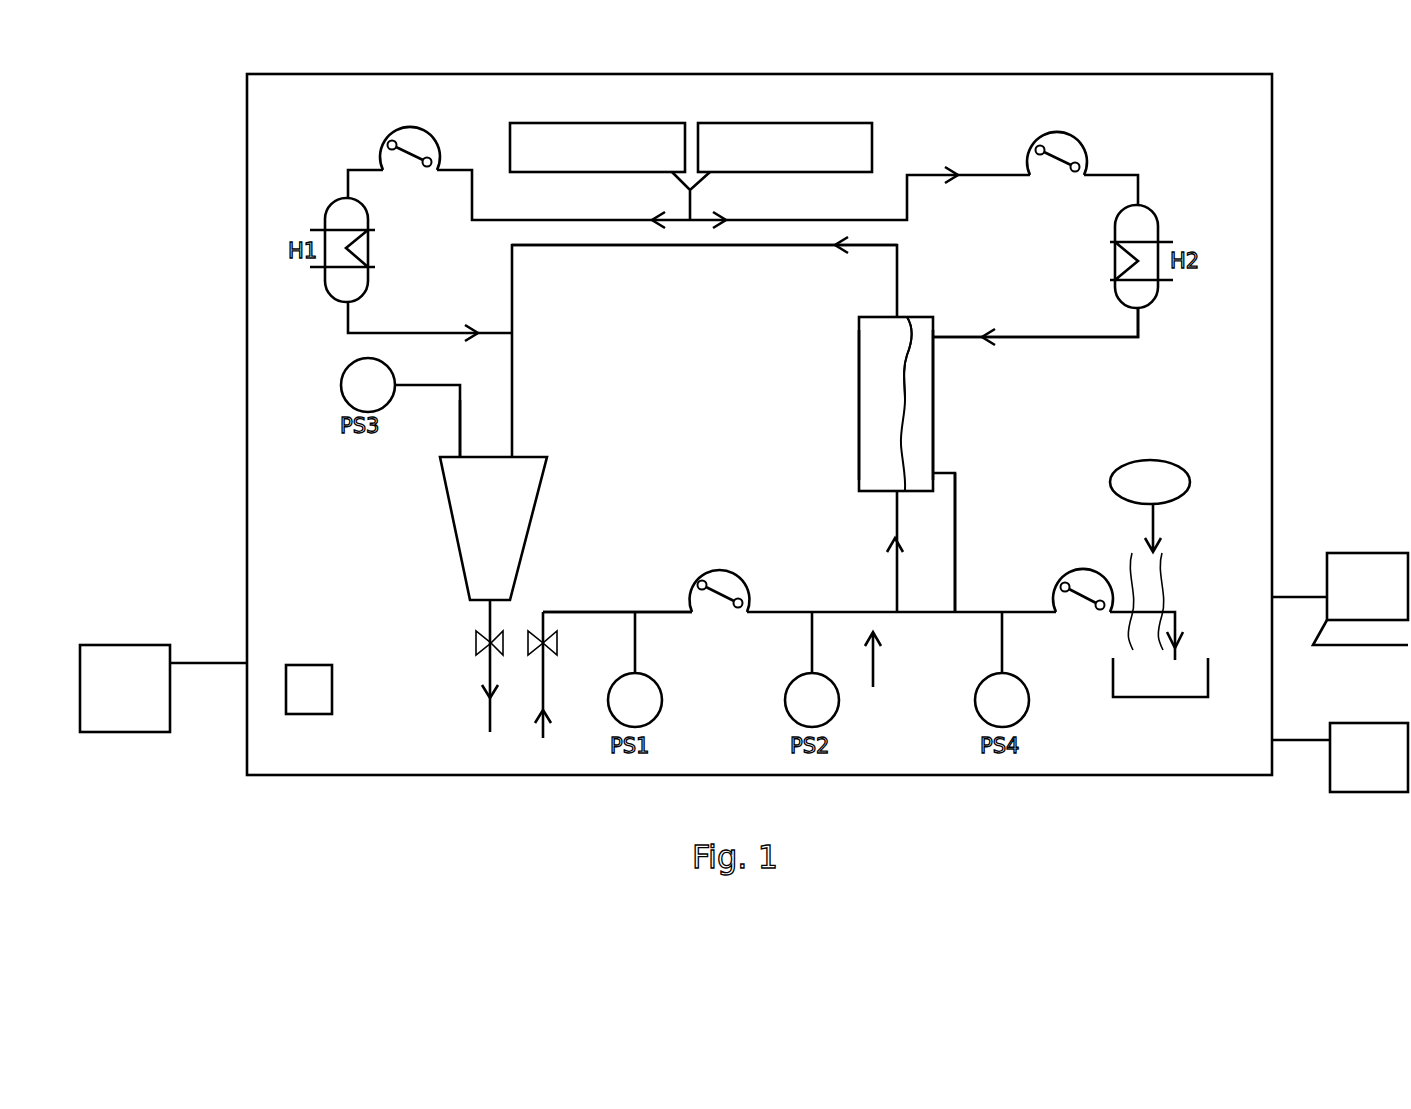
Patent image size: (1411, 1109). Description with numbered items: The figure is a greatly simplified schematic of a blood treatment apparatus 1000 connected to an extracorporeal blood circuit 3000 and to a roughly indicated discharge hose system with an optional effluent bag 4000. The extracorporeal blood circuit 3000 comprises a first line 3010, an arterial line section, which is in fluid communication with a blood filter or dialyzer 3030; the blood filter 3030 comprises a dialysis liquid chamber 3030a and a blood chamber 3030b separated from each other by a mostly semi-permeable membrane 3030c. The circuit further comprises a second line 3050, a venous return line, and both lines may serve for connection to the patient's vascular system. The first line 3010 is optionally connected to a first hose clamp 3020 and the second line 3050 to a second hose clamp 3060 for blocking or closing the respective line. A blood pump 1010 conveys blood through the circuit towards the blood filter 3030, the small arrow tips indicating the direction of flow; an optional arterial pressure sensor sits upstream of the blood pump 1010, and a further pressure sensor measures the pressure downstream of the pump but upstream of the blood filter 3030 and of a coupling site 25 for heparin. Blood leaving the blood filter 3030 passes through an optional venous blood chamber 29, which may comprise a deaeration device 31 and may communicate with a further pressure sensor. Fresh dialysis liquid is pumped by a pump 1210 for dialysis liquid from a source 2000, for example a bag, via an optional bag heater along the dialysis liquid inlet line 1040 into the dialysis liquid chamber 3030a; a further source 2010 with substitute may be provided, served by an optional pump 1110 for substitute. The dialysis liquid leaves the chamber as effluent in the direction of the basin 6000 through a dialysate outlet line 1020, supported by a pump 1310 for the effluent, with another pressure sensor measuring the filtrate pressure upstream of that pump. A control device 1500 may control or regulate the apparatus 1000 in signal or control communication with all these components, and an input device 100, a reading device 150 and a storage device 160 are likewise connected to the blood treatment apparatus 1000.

The blood treatment apparatus 1000 is at (247, 398).
The pump for substitute 1110 is at (415, 128).
The pump for dialysis liquid 1210 is at (1083, 150).
The blood pump 1010 is at (740, 577).
The pump for the effluent 1310 is at (1087, 570).
The further source with substitute 2010 is at (597, 147).
The source 2000 is at (785, 147).
The extracorporeal blood circuit 3000 is at (727, 414).
The second line 3050 is at (587, 245).
The blood filter or dialyzer 3030 is at (842, 332).
The dialysis liquid chamber 3030a is at (922, 428).
The blood chamber 3030b is at (878, 455).
The semi-permeable membrane 3030c is at (905, 380).
The dialysis liquid inlet line 1040 is at (1138, 337).
The venous blood chamber 29 is at (472, 505).
The deaeration device 31 is at (458, 437).
The second hose clamp 3060 is at (470, 641).
The first hose clamp 3020 is at (553, 640).
The first line 3010 is at (582, 612).
The dialysate outlet line 1020 is at (955, 565).
The coupling site for heparin 25 is at (878, 679).
The effluent bag 4000 is at (1150, 555).
The basin 6000 is at (1168, 690).
The control device or closed-loop control device 1500 is at (307, 700).
The storage device 160 is at (163, 688).
The input device 100 is at (1340, 599).
The reading device 150 is at (1340, 757).